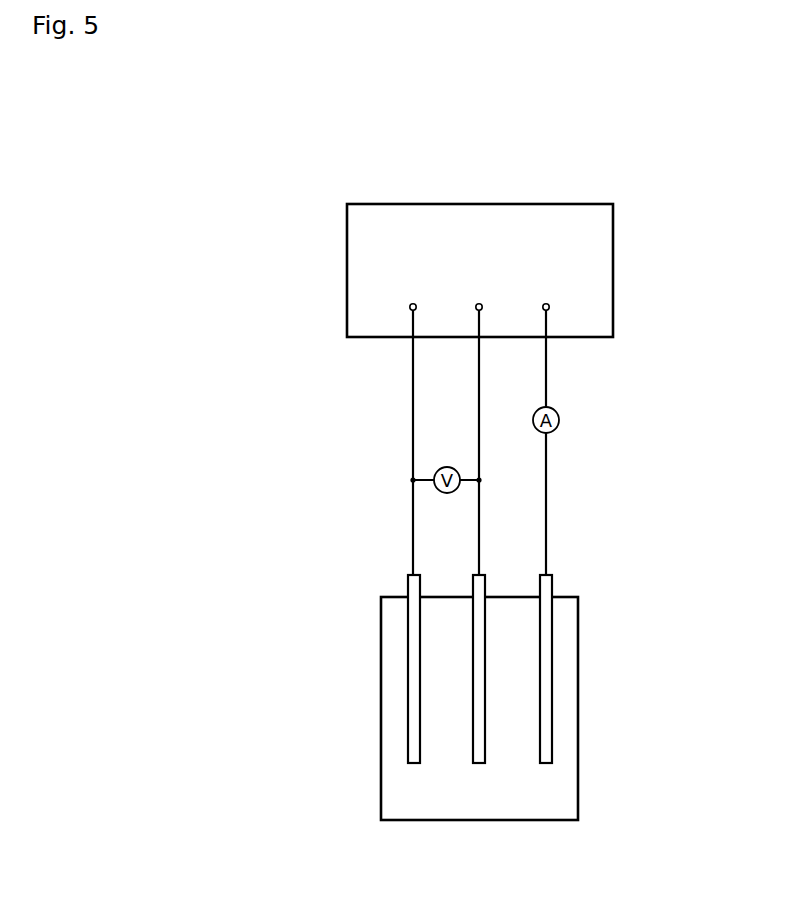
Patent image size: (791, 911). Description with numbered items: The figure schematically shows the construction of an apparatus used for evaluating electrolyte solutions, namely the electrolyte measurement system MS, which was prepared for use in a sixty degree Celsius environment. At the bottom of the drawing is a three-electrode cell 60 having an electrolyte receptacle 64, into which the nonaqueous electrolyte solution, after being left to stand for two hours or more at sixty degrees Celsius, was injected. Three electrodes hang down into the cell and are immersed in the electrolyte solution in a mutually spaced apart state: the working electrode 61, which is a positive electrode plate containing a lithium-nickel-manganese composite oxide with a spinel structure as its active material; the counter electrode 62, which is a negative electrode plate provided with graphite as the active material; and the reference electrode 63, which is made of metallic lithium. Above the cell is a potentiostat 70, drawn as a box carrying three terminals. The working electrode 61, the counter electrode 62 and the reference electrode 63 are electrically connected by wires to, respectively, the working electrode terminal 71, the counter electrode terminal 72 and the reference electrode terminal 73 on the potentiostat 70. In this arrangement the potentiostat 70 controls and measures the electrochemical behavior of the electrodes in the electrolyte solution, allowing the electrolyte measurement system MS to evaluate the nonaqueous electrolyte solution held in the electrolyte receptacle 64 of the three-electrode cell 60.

The electrolyte measurement system MS is at (381, 170).
The potentiostat 70 is at (577, 204).
The working electrode terminal 71 is at (413, 303).
The counter electrode terminal 72 is at (546, 303).
The reference electrode terminal 73 is at (479, 303).
The three-electrode cell 60 is at (479, 709).
The working electrode 61 is at (413, 660).
The counter electrode 62 is at (547, 748).
The reference electrode 63 is at (480, 705).
The electrolyte receptacle 64 is at (578, 630).